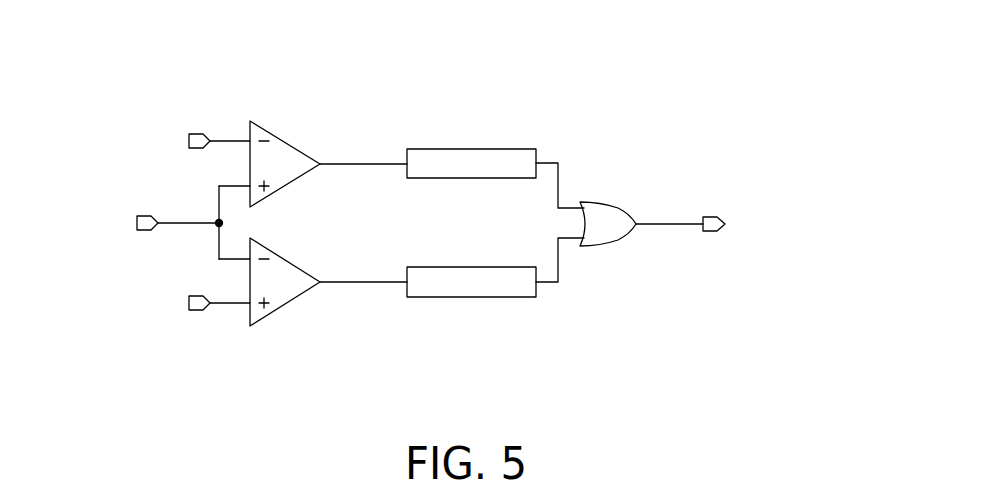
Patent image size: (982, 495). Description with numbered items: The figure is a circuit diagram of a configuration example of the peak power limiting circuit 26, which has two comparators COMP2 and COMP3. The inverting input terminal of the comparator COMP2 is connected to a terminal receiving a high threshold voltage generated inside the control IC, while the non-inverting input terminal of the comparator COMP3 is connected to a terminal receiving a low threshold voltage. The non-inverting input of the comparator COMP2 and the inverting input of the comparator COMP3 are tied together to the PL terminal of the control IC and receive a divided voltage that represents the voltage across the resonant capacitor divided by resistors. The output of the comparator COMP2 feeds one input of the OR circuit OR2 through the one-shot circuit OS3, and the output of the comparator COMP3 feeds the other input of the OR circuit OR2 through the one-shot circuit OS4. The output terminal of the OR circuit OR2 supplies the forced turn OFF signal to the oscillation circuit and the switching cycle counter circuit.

The peak power limiting circuit 26 is at (733, 109).
The comparator COMP2 is at (293, 152).
The comparator COMP3 is at (297, 269).
The one-shot circuit OS3 is at (476, 148).
The one-shot circuit OS4 is at (476, 265).
The OR circuit OR2 is at (606, 208).